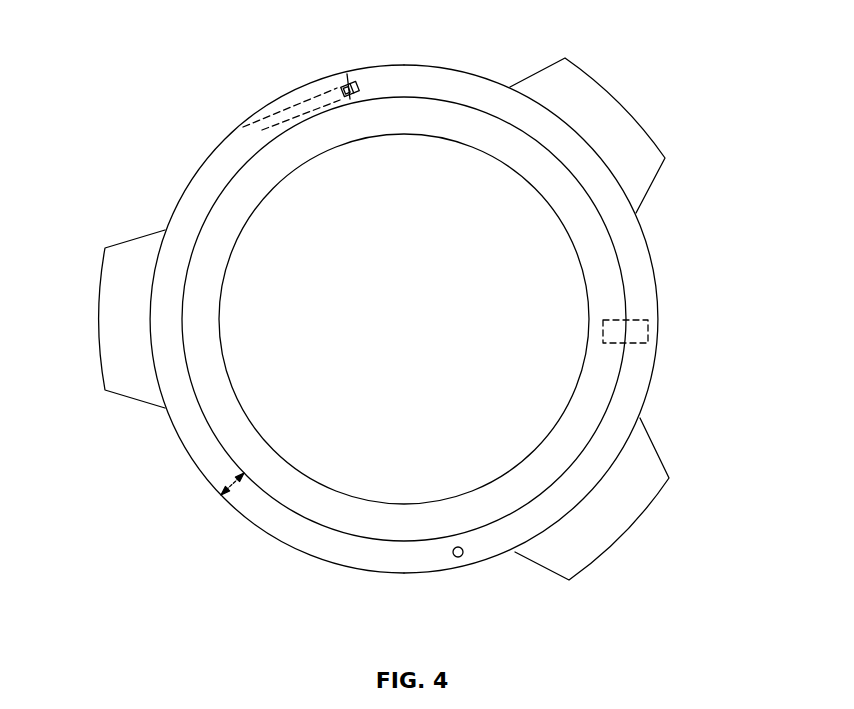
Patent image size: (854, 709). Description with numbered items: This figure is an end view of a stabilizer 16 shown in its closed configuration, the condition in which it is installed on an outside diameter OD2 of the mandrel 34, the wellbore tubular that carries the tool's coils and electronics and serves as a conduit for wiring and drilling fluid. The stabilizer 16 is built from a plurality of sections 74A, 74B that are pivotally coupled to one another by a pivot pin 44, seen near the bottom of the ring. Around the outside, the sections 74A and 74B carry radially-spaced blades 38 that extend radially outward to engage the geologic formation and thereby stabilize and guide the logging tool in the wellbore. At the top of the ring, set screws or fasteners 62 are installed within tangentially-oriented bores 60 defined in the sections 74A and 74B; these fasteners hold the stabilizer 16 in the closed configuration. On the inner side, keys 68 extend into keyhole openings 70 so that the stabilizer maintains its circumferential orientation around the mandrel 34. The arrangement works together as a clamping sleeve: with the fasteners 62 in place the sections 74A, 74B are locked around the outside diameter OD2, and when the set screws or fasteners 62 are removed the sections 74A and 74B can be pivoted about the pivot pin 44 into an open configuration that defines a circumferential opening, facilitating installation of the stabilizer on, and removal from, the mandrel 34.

The stabilizer 16 is at (640, 62).
The mandrel 34 is at (232, 432).
The blades 38 is at (94, 318).
The pivot pin 44 is at (456, 560).
The tangentially-oriented bores 60 is at (270, 116).
The set screws or fasteners 62 is at (347, 80).
The keys 68 is at (636, 322).
The keyhole openings 70 is at (612, 313).
The section 74A is at (176, 203).
The section 74B is at (648, 370).
The outside diameter of the mandrel OD2 is at (618, 246).